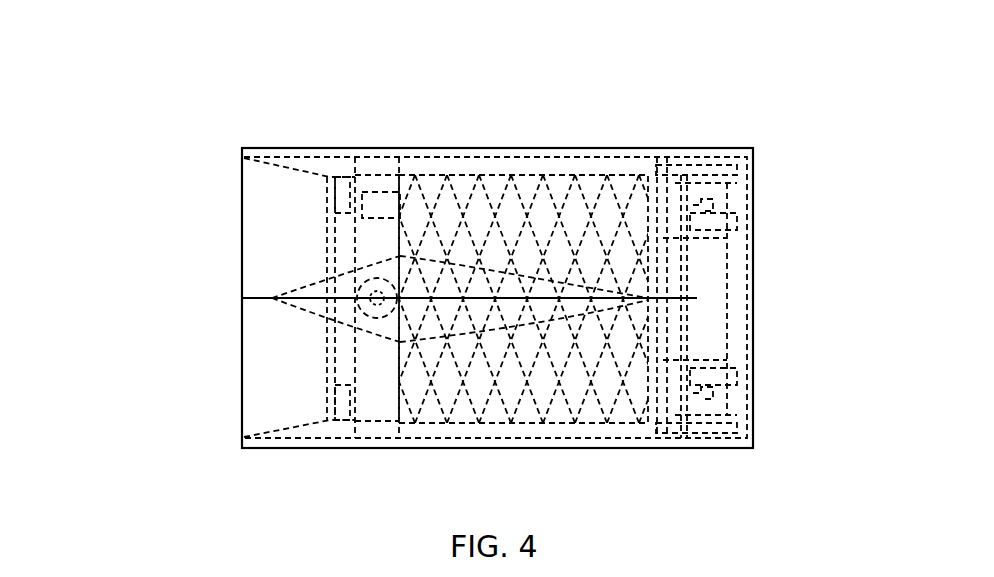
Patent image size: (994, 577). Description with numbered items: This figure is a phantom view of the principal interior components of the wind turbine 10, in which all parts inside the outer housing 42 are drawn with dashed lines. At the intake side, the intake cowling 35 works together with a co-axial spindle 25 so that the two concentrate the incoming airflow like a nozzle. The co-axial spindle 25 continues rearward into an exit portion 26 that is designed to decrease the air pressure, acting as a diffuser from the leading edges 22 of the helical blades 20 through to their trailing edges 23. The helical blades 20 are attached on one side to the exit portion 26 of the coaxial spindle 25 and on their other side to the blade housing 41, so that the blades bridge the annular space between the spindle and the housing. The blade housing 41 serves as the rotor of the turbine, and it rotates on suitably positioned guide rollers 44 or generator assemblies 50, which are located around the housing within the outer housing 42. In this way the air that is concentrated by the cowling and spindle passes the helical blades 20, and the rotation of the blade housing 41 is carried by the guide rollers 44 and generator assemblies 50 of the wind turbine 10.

The wind turbine 10 is at (205, 122).
The helical blades 20 is at (488, 200).
The leading edges 22 is at (397, 358).
The trailing edges 23 is at (648, 328).
The co-axial spindle 25 is at (312, 283).
The exit portion 26 is at (520, 270).
The intake cowling 35 is at (270, 216).
The blade housing 41 is at (412, 422).
The outer housing 42 is at (610, 148).
The guide rollers 44 is at (350, 188).
The generator assemblies 50 is at (735, 223).